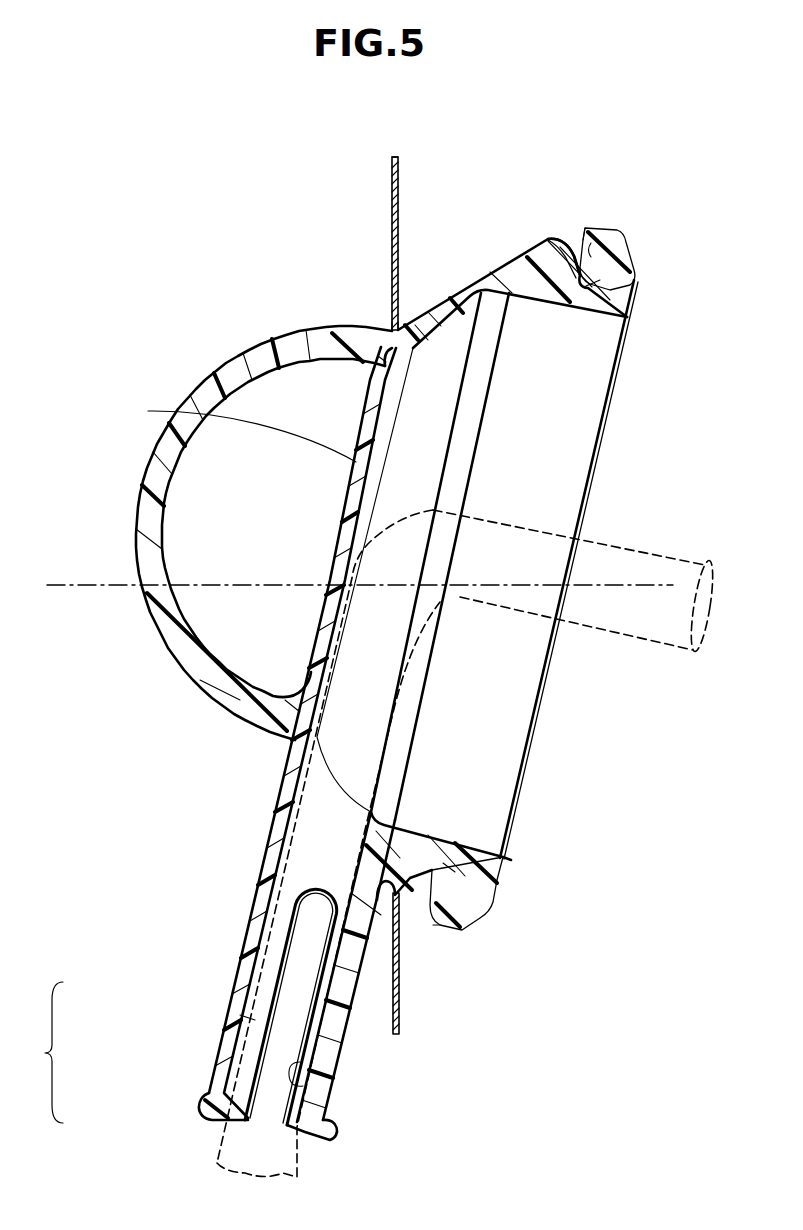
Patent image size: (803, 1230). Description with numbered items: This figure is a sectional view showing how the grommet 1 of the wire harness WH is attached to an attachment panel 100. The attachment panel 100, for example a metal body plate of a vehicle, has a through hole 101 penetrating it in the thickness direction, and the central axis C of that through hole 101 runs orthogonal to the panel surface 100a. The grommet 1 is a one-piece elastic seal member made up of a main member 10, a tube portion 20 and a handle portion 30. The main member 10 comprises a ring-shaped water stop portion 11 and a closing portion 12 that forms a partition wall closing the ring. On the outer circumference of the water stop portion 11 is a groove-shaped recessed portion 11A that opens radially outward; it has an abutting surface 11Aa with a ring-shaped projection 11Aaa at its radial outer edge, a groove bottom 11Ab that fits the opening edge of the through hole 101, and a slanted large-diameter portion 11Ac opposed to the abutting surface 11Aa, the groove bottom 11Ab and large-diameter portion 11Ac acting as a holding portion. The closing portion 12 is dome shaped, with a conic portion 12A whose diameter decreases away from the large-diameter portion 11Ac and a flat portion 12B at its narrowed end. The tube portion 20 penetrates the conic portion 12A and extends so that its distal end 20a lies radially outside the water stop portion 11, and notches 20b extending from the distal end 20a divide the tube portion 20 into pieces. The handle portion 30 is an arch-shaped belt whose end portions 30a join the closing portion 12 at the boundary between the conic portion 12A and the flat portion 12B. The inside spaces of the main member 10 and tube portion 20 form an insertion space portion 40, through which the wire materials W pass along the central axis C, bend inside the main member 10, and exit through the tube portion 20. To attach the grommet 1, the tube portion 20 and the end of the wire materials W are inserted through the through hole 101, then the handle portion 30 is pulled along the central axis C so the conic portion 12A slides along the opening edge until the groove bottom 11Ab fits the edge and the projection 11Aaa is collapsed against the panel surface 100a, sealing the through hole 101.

The grommet 1 is at (222, 1025).
The main member 10 is at (506, 262).
The water stop portion 11 is at (613, 231).
The recessed portion 11A is at (573, 233).
The abutting surface 11Aa is at (594, 247).
The groove bottom 11Ab is at (587, 282).
The projection 11Aaa is at (586, 226).
The large-diameter portion 11Ac is at (548, 237).
The closing portion 12 is at (470, 286).
The conic portion 12A is at (434, 318).
The flat portion 12B is at (230, 431).
The tube portion 20 is at (250, 933).
The distal end 20a is at (322, 1140).
The notch 20b is at (300, 1072).
The handle portion 30 is at (224, 364).
The end portion 30a is at (373, 350).
The insertion space portion 40 is at (560, 408).
The attachment panel 100 is at (391, 230).
The panel surface 100a is at (399, 200).
The through hole 101 is at (391, 304).
The central axis C is at (73, 584).
The wire material W is at (222, 1140).
The wire harness WH is at (33, 1052).